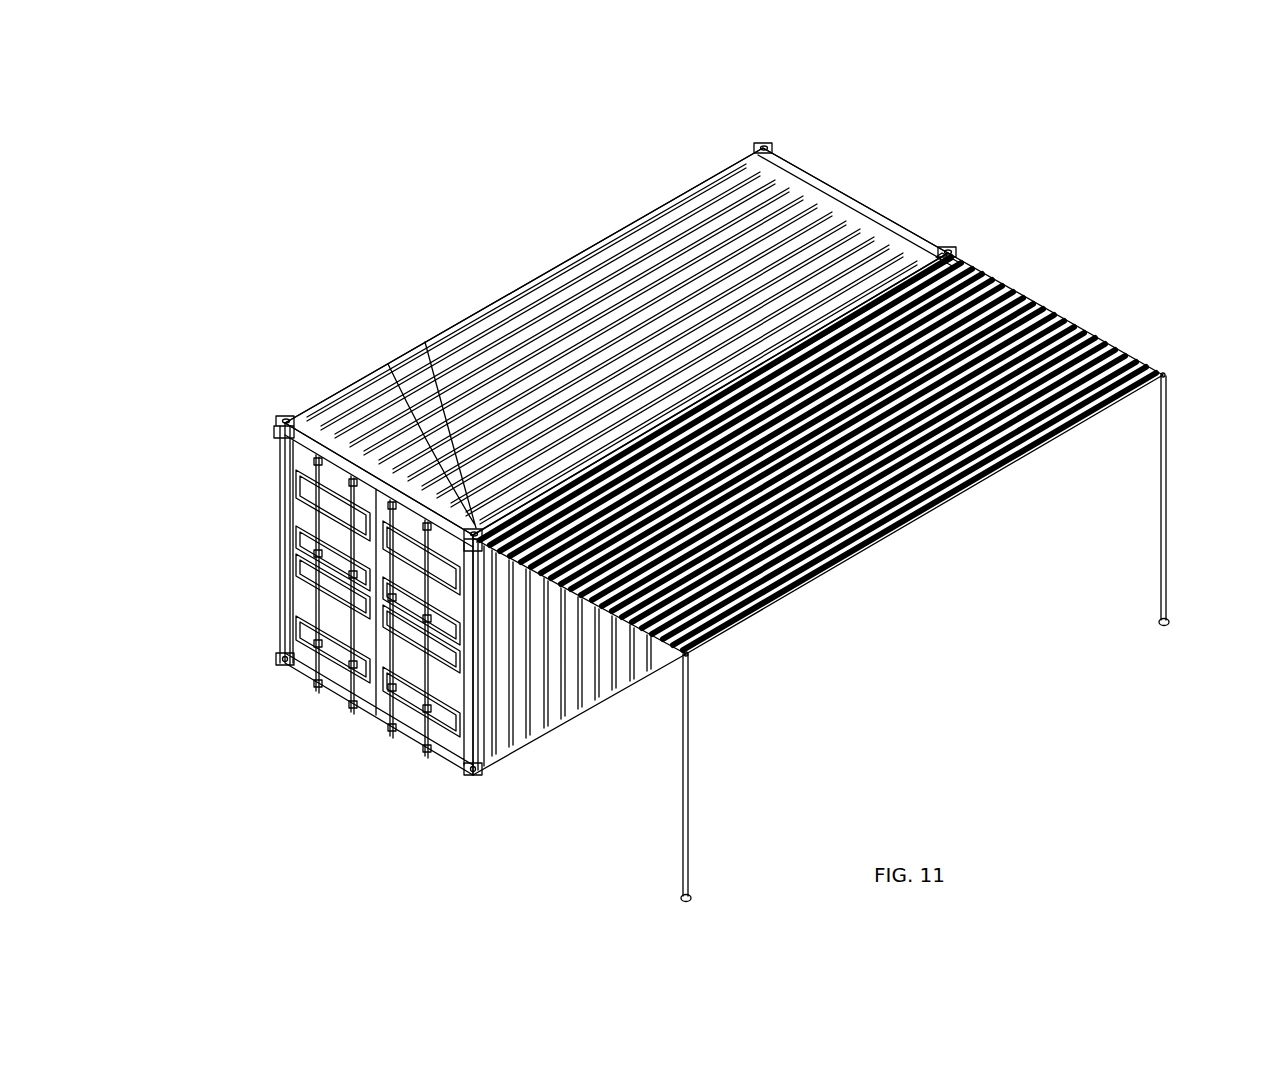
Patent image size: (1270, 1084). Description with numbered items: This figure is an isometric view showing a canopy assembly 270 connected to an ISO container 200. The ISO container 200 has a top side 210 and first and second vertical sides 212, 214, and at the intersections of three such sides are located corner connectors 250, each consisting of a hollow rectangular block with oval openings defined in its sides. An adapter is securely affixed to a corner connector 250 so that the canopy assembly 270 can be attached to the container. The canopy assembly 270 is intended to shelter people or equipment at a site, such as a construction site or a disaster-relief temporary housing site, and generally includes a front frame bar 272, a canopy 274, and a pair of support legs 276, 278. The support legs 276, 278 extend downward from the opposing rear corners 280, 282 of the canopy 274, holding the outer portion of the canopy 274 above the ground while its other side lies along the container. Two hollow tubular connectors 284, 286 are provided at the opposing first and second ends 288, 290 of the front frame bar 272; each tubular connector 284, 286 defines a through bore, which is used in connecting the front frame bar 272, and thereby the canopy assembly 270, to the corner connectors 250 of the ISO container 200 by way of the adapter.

The ISO container 200 is at (610, 465).
The top side 210 is at (746, 152).
The first vertical side 212 is at (285, 540).
The second vertical side 214 is at (513, 715).
The corner connector 250 is at (978, 205).
The canopy assembly 270 is at (860, 539).
The front frame bar 272 is at (987, 268).
The canopy 274 is at (1120, 330).
The support leg 276 is at (682, 790).
The support leg 278 is at (1160, 520).
The rear corner 280 is at (690, 650).
The rear corner 282 is at (1160, 372).
The tubular connector 284 is at (417, 334).
The tubular connector 286 is at (955, 257).
The first end 288 is at (848, 548).
The second end 290 is at (935, 262).